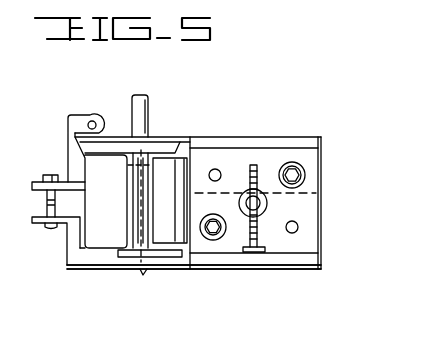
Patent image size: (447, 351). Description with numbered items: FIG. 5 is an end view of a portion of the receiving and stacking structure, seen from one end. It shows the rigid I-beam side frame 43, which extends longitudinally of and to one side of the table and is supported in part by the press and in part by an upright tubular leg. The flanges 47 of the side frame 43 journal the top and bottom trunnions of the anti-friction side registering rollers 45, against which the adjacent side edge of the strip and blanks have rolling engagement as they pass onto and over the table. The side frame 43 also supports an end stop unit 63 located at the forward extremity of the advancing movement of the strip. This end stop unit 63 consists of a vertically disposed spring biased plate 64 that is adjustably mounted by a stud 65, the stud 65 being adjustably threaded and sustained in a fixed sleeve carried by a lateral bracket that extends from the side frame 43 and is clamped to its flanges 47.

The I-beam side frame 43 is at (117, 250).
The side registering rollers 45 is at (181, 165).
The flanges 47 is at (112, 147).
The end stop unit 63 is at (338, 188).
The spring biased plate 64 is at (317, 260).
The stud 65 is at (245, 205).